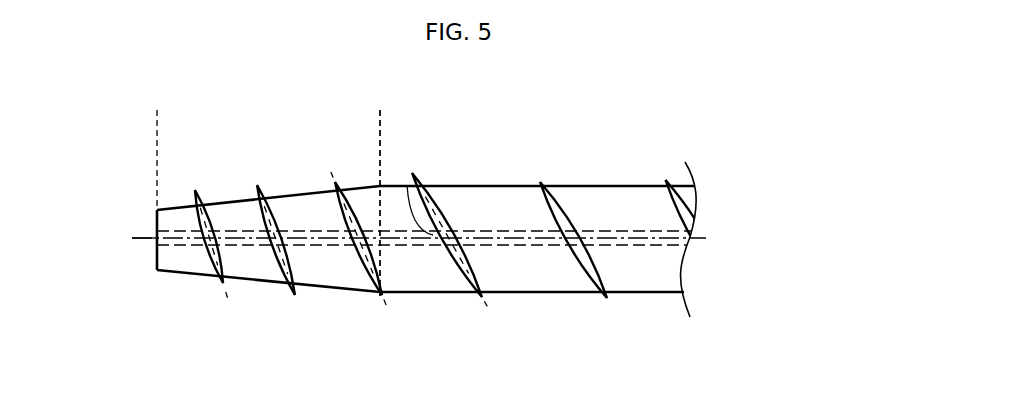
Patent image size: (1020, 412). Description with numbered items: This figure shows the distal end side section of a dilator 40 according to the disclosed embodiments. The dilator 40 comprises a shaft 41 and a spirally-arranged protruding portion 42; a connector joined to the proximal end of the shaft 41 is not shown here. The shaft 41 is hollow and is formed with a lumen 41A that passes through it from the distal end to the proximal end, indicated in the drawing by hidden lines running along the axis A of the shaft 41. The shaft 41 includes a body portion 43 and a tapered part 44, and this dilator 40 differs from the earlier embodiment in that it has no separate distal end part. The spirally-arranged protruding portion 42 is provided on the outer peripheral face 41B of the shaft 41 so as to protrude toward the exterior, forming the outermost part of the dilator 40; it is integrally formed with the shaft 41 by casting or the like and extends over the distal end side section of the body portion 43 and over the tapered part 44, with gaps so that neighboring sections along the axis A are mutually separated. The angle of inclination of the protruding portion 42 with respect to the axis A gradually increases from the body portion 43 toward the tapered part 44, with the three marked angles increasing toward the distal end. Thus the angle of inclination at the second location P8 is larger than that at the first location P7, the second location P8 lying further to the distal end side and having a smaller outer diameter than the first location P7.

The dilator 40 is at (731, 139).
The shaft 41 is at (678, 150).
The lumen 41A is at (655, 243).
The outer peripheral face 41B is at (520, 294).
The spirally-arranged protruding portion 42 is at (540, 182).
The body portion 43 is at (693, 117).
The tapered part 44 is at (377, 117).
The first location P7 is at (355, 173).
The second location P8 is at (208, 183).
The axis A is at (143, 240).